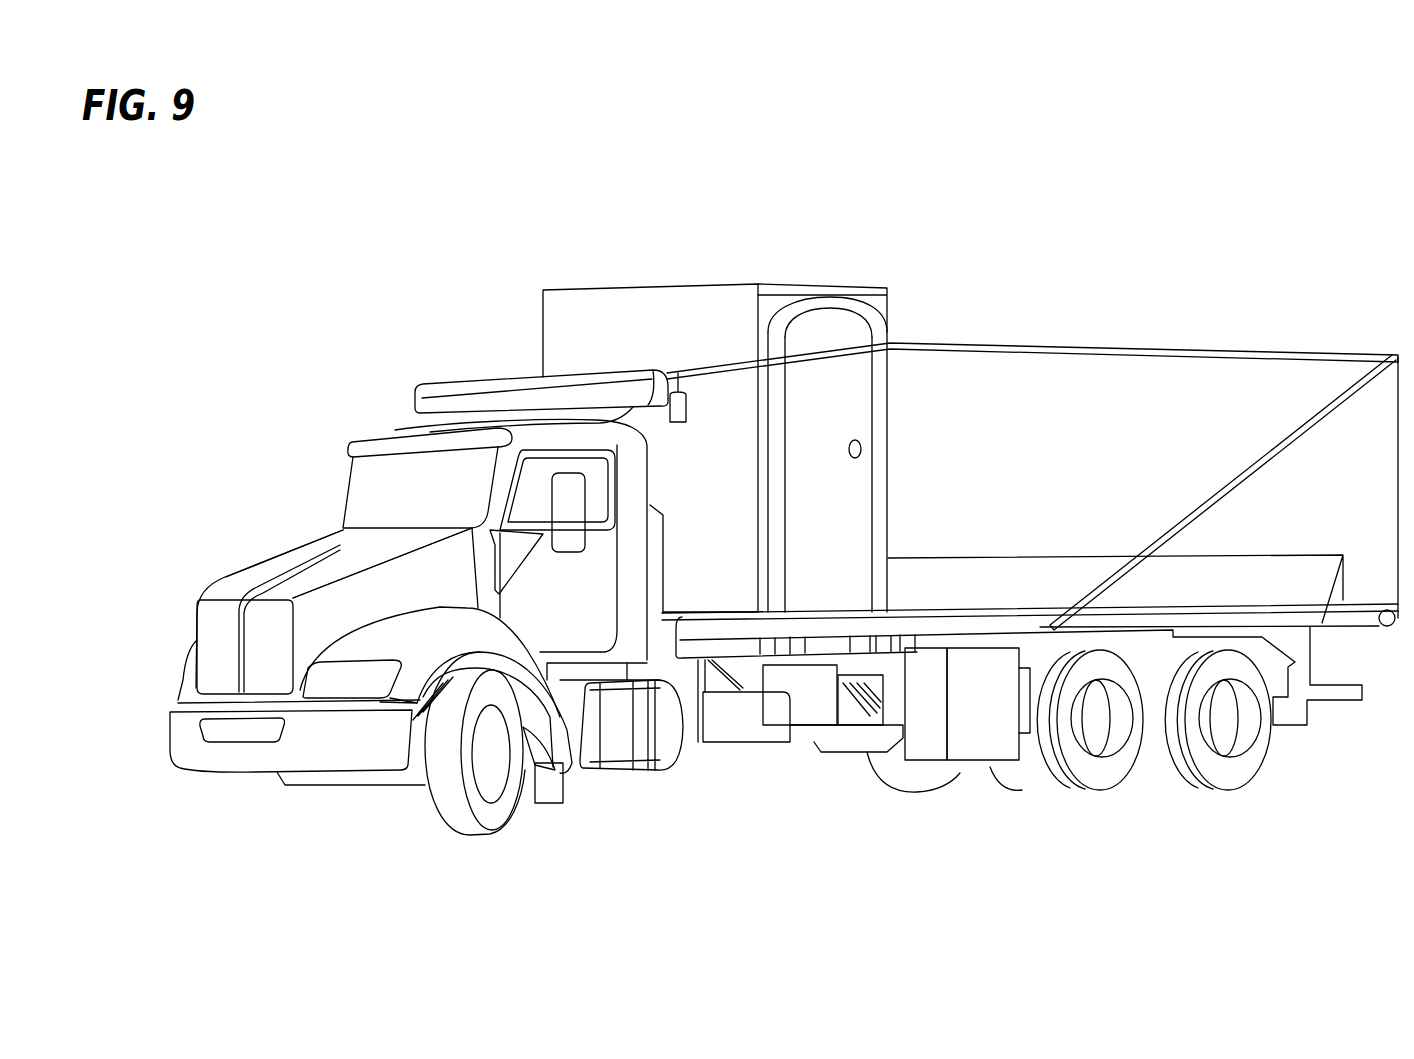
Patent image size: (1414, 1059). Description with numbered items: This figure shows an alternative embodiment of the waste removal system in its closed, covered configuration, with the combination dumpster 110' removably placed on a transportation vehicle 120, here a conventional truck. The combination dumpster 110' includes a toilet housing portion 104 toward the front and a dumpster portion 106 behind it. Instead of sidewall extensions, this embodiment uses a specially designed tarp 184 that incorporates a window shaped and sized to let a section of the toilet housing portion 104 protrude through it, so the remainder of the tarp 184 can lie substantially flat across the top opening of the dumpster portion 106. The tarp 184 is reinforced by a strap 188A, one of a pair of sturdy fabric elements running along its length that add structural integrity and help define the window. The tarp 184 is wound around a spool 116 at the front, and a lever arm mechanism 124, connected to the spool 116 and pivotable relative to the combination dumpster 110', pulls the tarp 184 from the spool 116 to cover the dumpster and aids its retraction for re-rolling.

The combination dumpster 110' is at (784, 507).
The toilet housing portion 104 is at (722, 333).
The dumpster portion 106 is at (953, 407).
The spool 116 is at (530, 398).
The transportation vehicle 120 is at (320, 600).
The lever arm mechanism 124 is at (1180, 515).
The tarp 184 is at (1165, 345).
The strap 188A is at (818, 360).